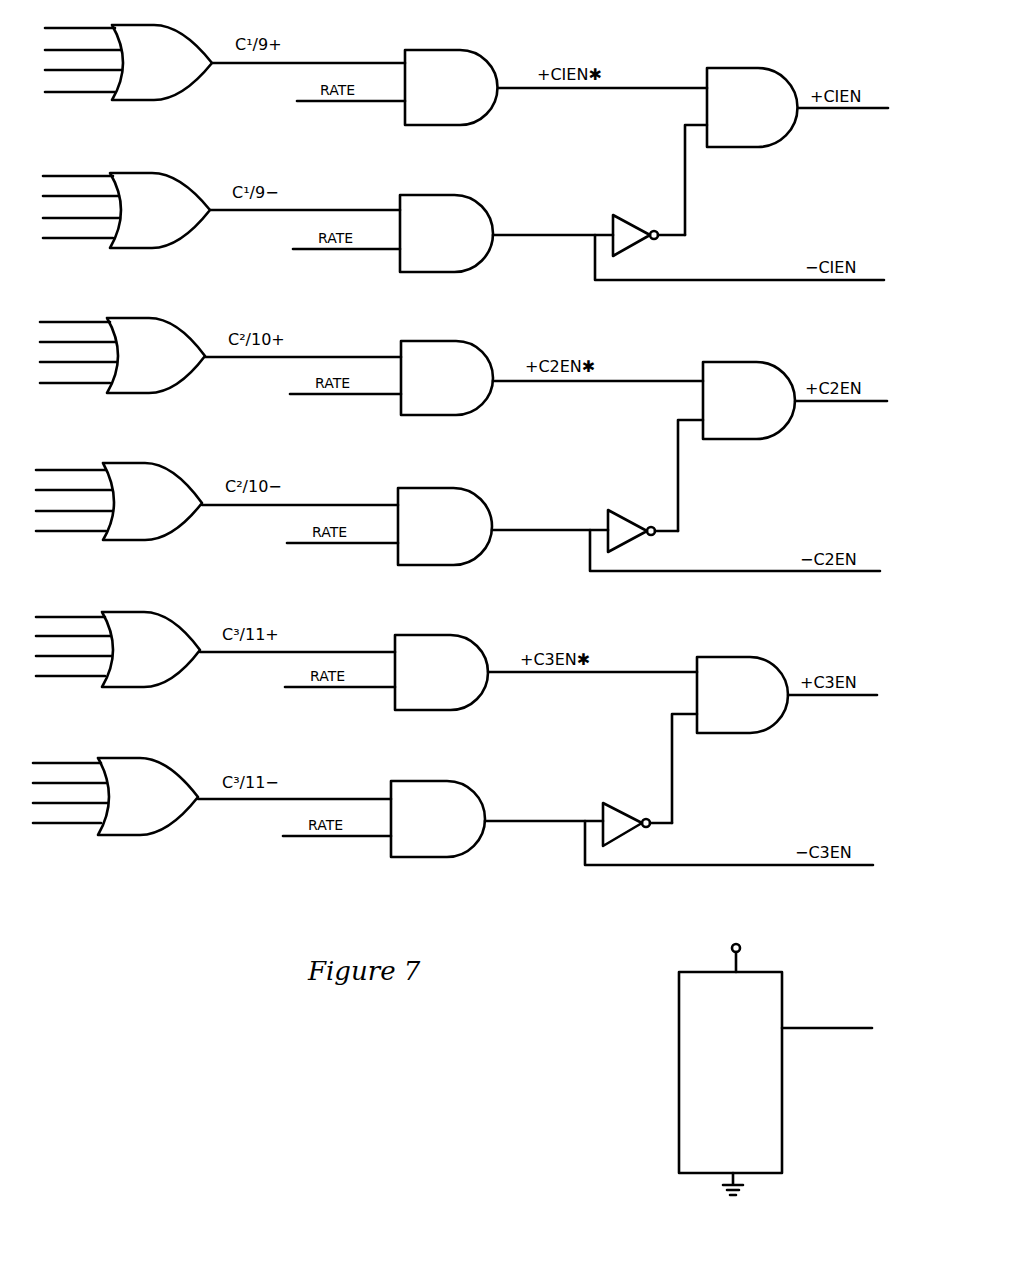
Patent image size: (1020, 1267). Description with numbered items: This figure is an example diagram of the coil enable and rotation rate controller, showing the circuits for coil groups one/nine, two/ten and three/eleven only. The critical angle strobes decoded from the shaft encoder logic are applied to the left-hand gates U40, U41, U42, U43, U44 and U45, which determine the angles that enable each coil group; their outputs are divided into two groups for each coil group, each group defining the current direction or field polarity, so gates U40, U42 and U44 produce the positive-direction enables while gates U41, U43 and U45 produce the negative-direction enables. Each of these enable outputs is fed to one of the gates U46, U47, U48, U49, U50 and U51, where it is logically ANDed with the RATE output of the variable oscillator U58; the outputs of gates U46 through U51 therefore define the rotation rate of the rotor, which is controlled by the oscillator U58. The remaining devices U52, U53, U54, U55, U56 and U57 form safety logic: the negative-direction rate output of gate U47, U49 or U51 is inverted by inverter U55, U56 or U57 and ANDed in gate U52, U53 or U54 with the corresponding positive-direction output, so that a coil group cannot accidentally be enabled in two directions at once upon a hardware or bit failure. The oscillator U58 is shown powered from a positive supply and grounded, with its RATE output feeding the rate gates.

The OR gate U40 is at (128, 54).
The OR gate U41 is at (126, 202).
The OR gate U42 is at (122, 348).
The OR gate U43 is at (119, 495).
The OR gate U44 is at (118, 642).
The OR gate U45 is at (115, 789).
The AND gate U46 is at (451, 87).
The AND gate U47 is at (446, 233).
The AND gate U48 is at (447, 378).
The AND gate U49 is at (445, 526).
The AND gate U50 is at (441, 672).
The AND gate U51 is at (438, 819).
The safety logic gate U52 is at (752, 107).
The safety logic gate U53 is at (749, 400).
The safety logic gate U54 is at (742, 695).
The safety logic inverter U55 is at (649, 222).
The safety logic inverter U56 is at (643, 517).
The safety logic inverter U57 is at (637, 810).
The variable oscillator U58 is at (775, 1064).